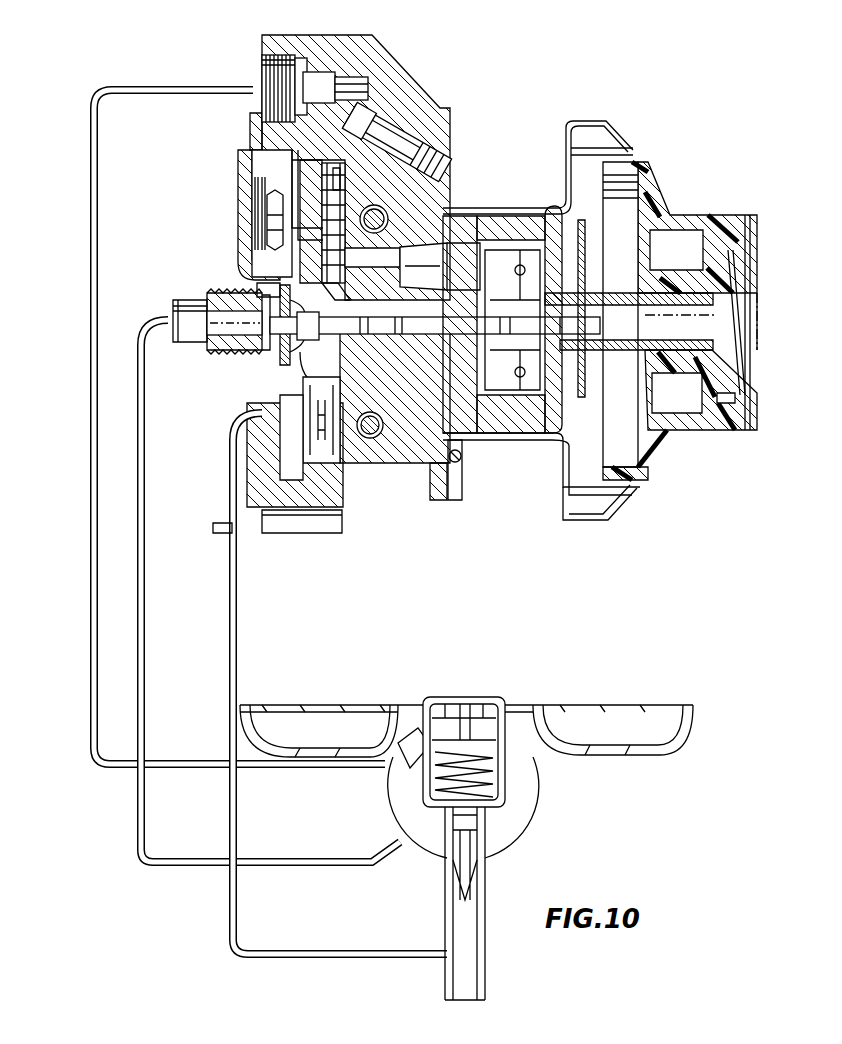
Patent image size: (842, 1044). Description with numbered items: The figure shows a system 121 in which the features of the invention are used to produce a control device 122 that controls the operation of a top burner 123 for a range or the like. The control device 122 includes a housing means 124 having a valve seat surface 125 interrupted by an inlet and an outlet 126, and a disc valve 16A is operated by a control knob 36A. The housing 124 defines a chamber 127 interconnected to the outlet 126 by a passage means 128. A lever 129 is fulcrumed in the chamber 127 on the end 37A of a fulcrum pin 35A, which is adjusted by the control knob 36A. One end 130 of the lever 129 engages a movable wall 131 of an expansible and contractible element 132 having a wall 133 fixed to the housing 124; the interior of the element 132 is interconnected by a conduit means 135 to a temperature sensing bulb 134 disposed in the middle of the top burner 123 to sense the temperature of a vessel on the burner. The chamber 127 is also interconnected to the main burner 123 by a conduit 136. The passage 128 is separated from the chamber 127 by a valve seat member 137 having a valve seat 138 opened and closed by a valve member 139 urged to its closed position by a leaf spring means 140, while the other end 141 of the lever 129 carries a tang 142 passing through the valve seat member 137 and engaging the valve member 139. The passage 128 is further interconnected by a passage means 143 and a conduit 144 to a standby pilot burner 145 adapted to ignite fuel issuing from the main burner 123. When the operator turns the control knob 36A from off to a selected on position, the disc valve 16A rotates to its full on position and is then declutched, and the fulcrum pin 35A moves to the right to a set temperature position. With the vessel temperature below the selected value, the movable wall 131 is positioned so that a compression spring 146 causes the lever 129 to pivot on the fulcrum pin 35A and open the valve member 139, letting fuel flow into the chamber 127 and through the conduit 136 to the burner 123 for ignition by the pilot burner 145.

The system 121 is at (549, 74).
The control device 122 is at (506, 158).
The top burner 123 is at (598, 705).
The housing means 124 is at (374, 44).
The valve seat surface 125 is at (486, 222).
The outlet 126 is at (455, 292).
The chamber 127 is at (270, 144).
The passage means 128 is at (378, 268).
The lever 129 is at (268, 280).
The one end of the lever 130 is at (312, 412).
The movable wall 131 is at (326, 443).
The expansible and contractible element 132 is at (282, 375).
The wall 133 is at (272, 478).
The temperature sensing bulb 134 is at (490, 705).
The conduit means 135 is at (350, 952).
The conduit 136 is at (147, 600).
The valve seat member 137 is at (318, 175).
The valve seat 138 is at (341, 178).
The valve member 139 is at (342, 203).
The leaf spring means 140 is at (343, 283).
The other end of the lever 141 is at (290, 180).
The tang 142 is at (295, 165).
The passage means 143 is at (444, 174).
The conduit 144 is at (100, 178).
The standby pilot burner 145 is at (405, 745).
The compression spring 146 is at (253, 245).
The disc valve 16A is at (518, 225).
The fulcrum pin 35A is at (355, 336).
The control knob 36A is at (726, 210).
The end of the fulcrum pin 37A is at (280, 332).